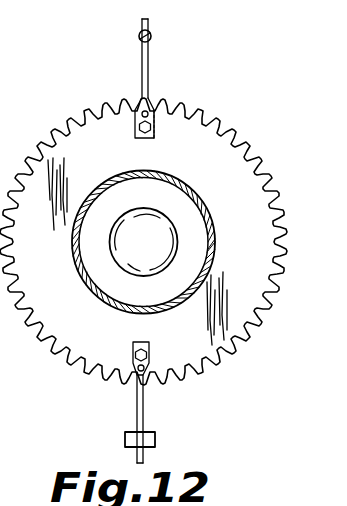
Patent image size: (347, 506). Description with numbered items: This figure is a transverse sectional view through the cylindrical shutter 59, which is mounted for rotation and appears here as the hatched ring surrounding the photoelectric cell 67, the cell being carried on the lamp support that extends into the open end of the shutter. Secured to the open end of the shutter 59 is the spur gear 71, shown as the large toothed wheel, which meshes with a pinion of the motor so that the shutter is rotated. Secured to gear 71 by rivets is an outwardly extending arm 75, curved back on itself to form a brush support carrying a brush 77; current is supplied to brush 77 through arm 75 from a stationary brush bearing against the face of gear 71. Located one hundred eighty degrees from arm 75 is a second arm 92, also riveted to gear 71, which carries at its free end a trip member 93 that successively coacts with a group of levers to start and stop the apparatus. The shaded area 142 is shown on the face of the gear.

The spur gear 71 is at (197, 161).
The cylindrical shutter 59 is at (212, 262).
The photoelectric cell 67 is at (150, 250).
The shading / gear web 142 is at (4, 249).
The arm 75 is at (148, 68).
The brush 77 is at (151, 34).
The arm 92 is at (143, 418).
The trip member 93 is at (155, 440).